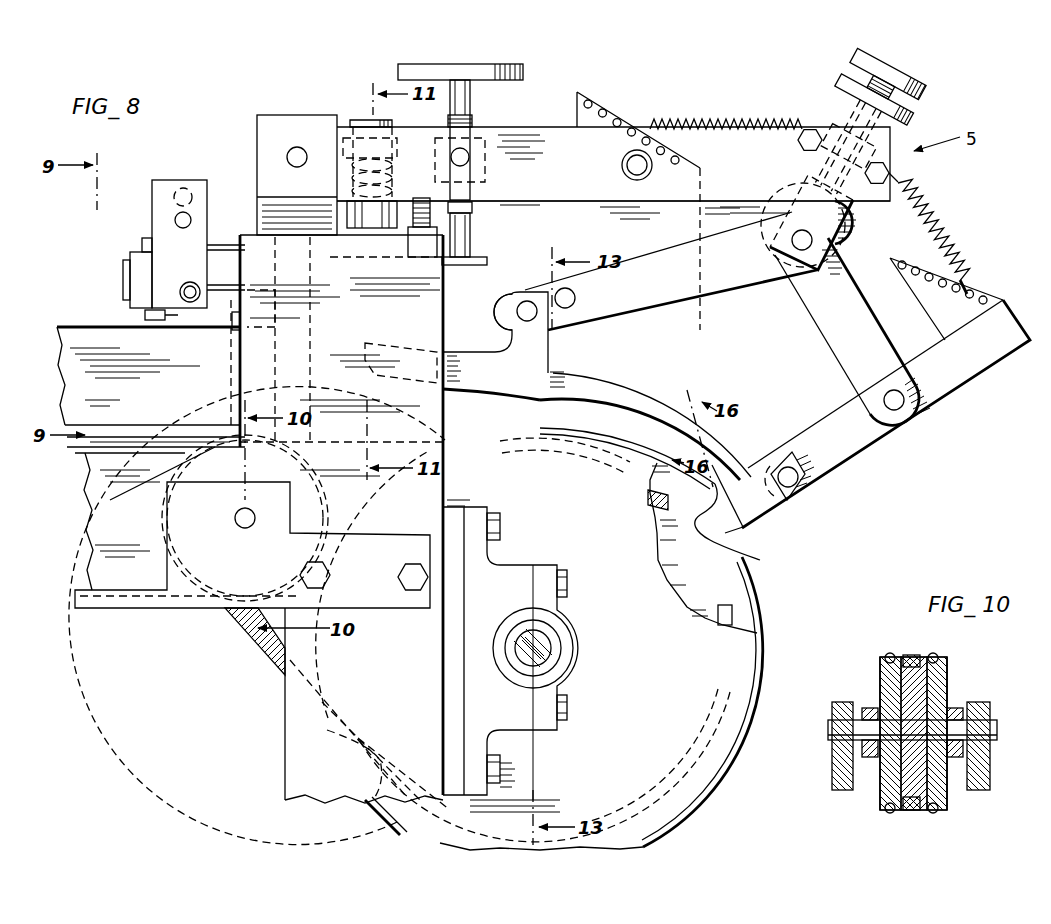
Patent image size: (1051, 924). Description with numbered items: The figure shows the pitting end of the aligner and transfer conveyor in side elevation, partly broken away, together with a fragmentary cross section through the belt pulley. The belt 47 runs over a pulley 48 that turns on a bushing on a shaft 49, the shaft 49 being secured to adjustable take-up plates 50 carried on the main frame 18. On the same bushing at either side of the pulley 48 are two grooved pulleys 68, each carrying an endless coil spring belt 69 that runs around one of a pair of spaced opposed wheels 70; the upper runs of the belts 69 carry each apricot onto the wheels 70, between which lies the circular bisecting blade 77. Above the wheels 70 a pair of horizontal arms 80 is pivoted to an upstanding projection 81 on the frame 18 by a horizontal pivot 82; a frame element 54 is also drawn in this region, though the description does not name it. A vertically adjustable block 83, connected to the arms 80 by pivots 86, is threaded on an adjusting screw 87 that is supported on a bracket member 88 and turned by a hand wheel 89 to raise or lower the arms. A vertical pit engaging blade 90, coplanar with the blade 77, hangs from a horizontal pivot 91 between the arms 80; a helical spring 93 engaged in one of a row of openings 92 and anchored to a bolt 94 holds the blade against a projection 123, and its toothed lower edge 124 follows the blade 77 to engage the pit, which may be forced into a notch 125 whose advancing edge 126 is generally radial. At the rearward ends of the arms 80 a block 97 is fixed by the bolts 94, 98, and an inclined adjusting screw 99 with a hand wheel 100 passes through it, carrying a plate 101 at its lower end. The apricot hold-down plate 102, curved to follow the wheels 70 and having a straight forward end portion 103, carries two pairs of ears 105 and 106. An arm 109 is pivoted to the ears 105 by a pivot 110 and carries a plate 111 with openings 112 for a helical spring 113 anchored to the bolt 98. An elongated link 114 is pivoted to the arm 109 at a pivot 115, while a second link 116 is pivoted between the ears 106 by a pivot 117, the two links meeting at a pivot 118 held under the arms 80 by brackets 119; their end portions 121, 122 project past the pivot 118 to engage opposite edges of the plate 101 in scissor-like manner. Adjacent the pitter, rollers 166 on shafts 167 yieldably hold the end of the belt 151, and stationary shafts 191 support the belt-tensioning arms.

In FIG. 8, the main frame 18 is at (287, 718).
In FIG. 8, the belt 47 is at (150, 440).
In FIG. 10, the belt 47 is at (912, 655).
In FIG. 10, the pulley 48 is at (920, 690).
In FIG. 10, the shaft 49 is at (990, 735).
In FIG. 10, the adjustable take-up plates 50 is at (845, 778).
In FIG. 8, the block 54 is at (428, 320).
In FIG. 8, the pulleys 68 is at (110, 500).
In FIG. 10, the pulleys 68 is at (880, 690).
In FIG. 8, the endless coil spring belt 69 is at (278, 662).
In FIG. 10, the endless coil spring belt 69 is at (886, 656).
In FIG. 8, the wheels 70 is at (648, 653).
In FIG. 8, the bisecting blade 77 is at (740, 583).
In FIG. 8, the arms 80 is at (549, 191).
In FIG. 8, the upstanding projection 81 is at (268, 116).
In FIG. 8, the horizontal pivot 82 is at (290, 156).
In FIG. 8, the vertically adjustable block 83 is at (487, 165).
In FIG. 8, the pivots 86 is at (466, 152).
In FIG. 8, the adjusting screw 87 is at (470, 100).
In FIG. 8, the bracket member 88 is at (482, 257).
In FIG. 8, the hand wheel 89 is at (400, 71).
In FIG. 8, the pit engaging blade 90 is at (658, 370).
In FIG. 8, the horizontal pivot 91 is at (624, 172).
In FIG. 8, the spring engageable openings 92 is at (630, 128).
In FIG. 8, the helical spring 93 is at (690, 120).
In FIG. 8, the bolt 94 is at (809, 128).
In FIG. 8, the block 97 is at (905, 118).
In FIG. 8, the bolt 98 is at (891, 174).
In FIG. 8, the adjusting screw 99 is at (838, 96).
In FIG. 8, the hand wheel 100 is at (890, 80).
In FIG. 8, the plate 101 is at (818, 147).
In FIG. 8, the apricot hold-down plate 102 is at (722, 430).
In FIG. 8, the forward end portion 103 is at (478, 384).
In FIG. 8, the ears 105 is at (779, 457).
In FIG. 8, the ears 106 is at (525, 275).
In FIG. 8, the arm 109 is at (978, 363).
In FIG. 8, the horizontal pivot 110 is at (792, 487).
In FIG. 8, the plate 111 is at (952, 315).
In FIG. 8, the openings 112 is at (984, 296).
In FIG. 8, the helical spring 113 is at (935, 230).
In FIG. 8, the elongated link 114 is at (852, 320).
In FIG. 8, the horizontal pivot 115 is at (896, 405).
In FIG. 8, the second link 116 is at (716, 290).
In FIG. 8, the horizontal pivot 117 is at (517, 311).
In FIG. 8, the horizontal pivot 118 is at (791, 241).
In FIG. 8, the brackets 119 is at (800, 267).
In FIG. 8, the outermost end portion 121 is at (773, 212).
In FIG. 8, the outermost end portion 122 is at (849, 225).
In FIG. 8, the projection 123 is at (575, 294).
In FIG. 8, the lower edge 124 is at (562, 418).
In FIG. 8, the notches 125 is at (738, 552).
In FIG. 8, the advancing edge 126 is at (744, 530).
In FIG. 8, the belt 151 is at (85, 327).
In FIG. 8, the rollers 166 is at (230, 352).
In FIG. 8, the shafts 167 is at (250, 290).
In FIG. 8, the upstanding stationary shafts 191 is at (356, 120).